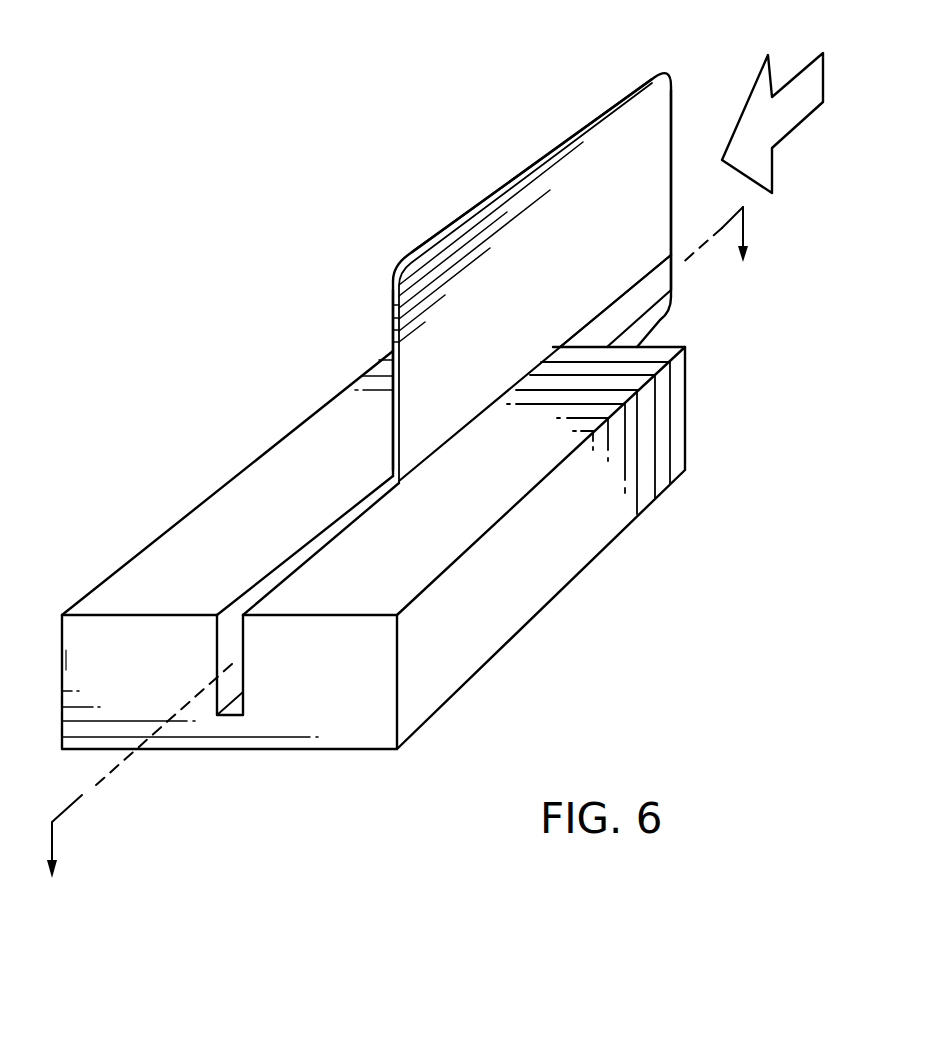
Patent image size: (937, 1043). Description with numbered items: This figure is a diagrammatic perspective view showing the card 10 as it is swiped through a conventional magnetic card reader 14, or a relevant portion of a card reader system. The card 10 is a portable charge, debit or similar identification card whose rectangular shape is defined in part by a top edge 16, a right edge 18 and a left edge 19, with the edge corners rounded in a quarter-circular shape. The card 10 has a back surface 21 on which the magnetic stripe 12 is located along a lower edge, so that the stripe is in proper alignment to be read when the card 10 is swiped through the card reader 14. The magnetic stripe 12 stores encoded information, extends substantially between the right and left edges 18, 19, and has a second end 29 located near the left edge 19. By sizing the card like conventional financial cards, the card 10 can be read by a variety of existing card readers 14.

The card 10 is at (483, 60).
The magnetic stripe 12 is at (633, 306).
The magnetic card reader 14 is at (527, 568).
The top edge 16 is at (530, 172).
The right edge 18 is at (397, 309).
The left edge 19 is at (672, 125).
The back surface 21 is at (633, 130).
The second end 29 is at (655, 288).